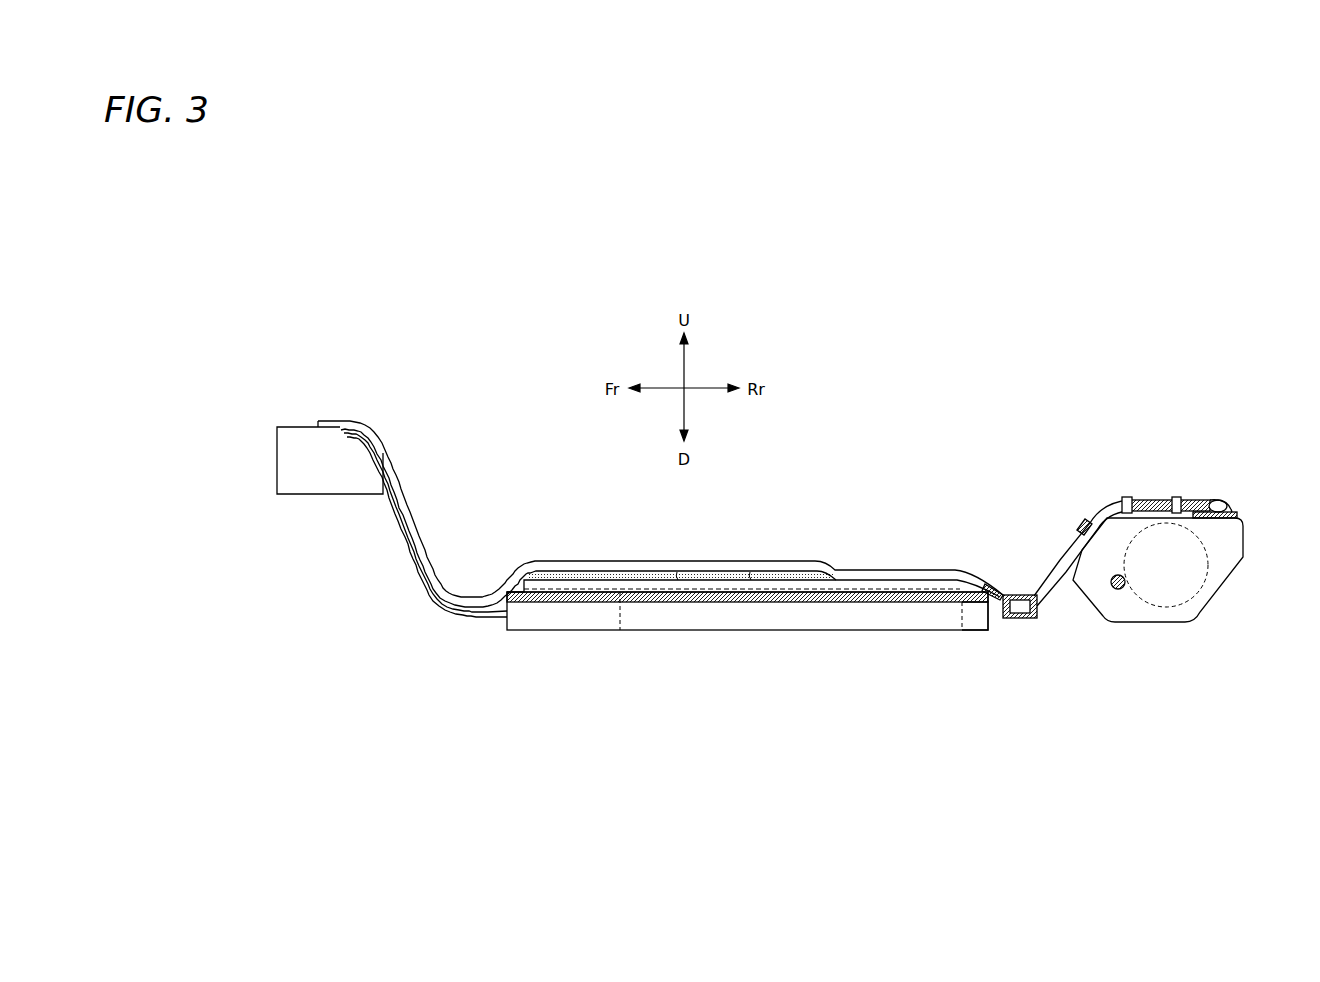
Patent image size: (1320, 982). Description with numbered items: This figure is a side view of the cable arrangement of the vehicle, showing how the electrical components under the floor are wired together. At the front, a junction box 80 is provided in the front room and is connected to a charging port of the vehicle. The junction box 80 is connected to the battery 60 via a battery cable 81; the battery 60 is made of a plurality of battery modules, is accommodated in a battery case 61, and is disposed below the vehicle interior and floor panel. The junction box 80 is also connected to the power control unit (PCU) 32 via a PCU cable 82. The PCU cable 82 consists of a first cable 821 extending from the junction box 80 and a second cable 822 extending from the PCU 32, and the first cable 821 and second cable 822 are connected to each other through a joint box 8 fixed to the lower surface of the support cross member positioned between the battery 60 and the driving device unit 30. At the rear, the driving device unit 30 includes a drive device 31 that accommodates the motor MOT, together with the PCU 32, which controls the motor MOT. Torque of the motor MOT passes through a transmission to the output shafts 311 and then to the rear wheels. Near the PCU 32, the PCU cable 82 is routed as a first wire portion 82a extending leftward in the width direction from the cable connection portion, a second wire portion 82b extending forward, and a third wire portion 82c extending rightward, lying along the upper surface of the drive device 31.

The junction box 80 is at (301, 456).
The battery cable 81 is at (481, 619).
The PCU cable 82 is at (877, 560).
The first cable 821 is at (605, 561).
The second cable 822 is at (1048, 593).
The first wire portion 82a is at (1222, 500).
The second wire portion 82b is at (1153, 499).
The third wire portion 82c is at (1098, 510).
The joint box 8 is at (1020, 620).
The battery 60 is at (674, 632).
The battery case 61 is at (927, 631).
The driving device unit 30 is at (1184, 597).
The drive device 31 is at (1244, 557).
The power control unit (PCU) 32 is at (1236, 510).
The output shaft 311 is at (1122, 590).
The motor MOT is at (1200, 597).